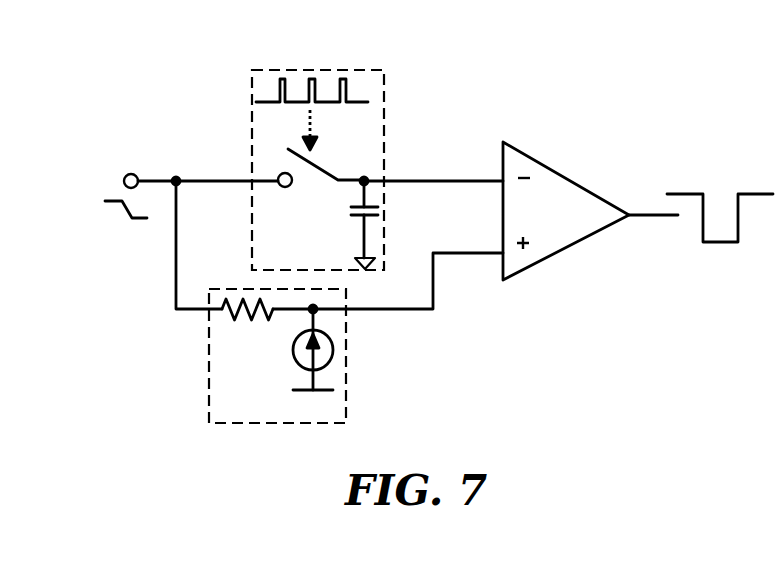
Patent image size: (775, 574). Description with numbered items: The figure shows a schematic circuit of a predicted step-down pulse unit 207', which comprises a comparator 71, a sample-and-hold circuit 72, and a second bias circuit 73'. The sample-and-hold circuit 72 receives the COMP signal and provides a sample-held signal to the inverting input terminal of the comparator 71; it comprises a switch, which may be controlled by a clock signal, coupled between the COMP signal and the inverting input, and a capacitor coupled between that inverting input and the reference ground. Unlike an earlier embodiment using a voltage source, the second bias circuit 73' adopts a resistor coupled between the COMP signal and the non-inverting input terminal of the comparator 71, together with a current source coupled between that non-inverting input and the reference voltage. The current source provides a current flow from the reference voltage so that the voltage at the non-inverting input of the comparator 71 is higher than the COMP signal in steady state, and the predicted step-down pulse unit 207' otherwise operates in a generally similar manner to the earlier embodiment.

The predicted step-down pulse unit 207' is at (400, 168).
The sample-and-hold circuit 72 is at (390, 97).
The comparator 71 is at (560, 162).
The second bias circuit 73' is at (307, 357).